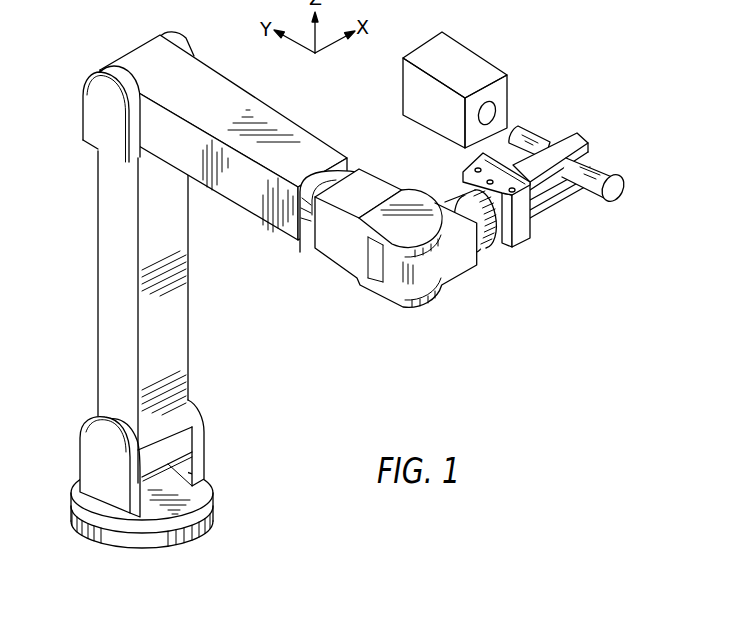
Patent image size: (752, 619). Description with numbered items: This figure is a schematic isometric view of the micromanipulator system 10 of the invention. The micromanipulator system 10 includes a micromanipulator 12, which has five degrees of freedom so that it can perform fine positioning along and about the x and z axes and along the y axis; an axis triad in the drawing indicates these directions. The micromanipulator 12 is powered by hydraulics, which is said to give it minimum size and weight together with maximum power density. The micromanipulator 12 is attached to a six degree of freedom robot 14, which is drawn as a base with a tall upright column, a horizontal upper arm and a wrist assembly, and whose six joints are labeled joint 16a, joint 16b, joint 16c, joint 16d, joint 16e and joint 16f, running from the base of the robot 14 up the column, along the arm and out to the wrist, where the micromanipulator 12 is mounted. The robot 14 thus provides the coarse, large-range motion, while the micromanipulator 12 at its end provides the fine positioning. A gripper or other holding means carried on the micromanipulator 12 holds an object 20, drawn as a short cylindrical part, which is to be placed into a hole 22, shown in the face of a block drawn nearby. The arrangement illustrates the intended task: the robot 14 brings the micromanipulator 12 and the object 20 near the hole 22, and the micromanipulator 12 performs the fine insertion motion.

The micromanipulator system 10 is at (345, 290).
The micromanipulator 12 is at (540, 236).
The robot 14 is at (89, 310).
The joint 16a is at (212, 514).
The joint 16b is at (205, 427).
The joint 16c is at (184, 50).
The joint 16d is at (310, 219).
The joint 16e is at (410, 308).
The joint 16f is at (485, 249).
The object 20 is at (611, 172).
The hole 22 is at (494, 106).